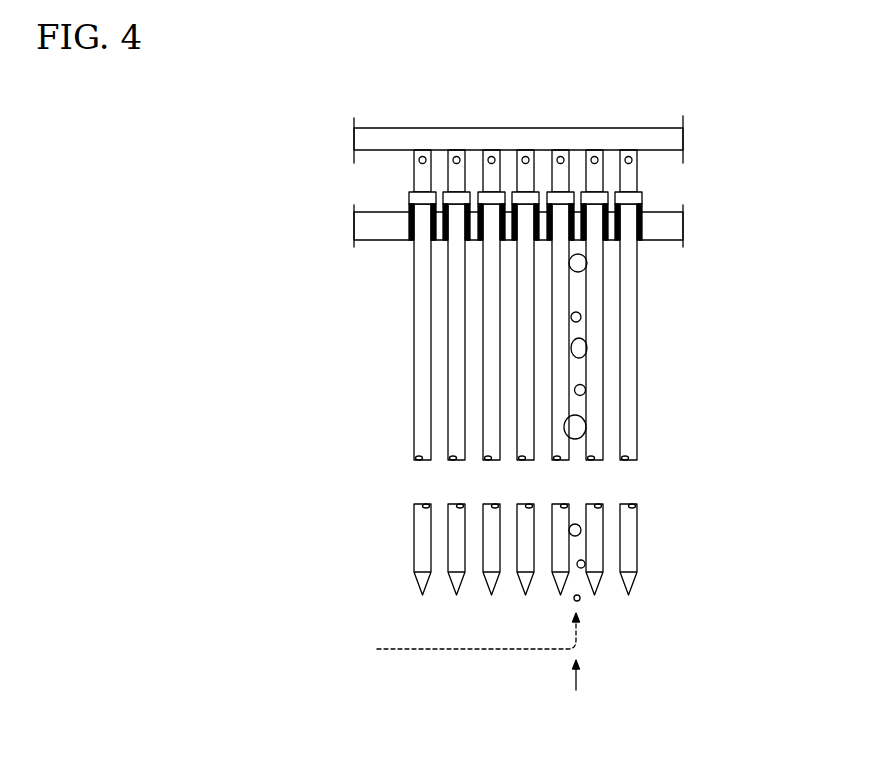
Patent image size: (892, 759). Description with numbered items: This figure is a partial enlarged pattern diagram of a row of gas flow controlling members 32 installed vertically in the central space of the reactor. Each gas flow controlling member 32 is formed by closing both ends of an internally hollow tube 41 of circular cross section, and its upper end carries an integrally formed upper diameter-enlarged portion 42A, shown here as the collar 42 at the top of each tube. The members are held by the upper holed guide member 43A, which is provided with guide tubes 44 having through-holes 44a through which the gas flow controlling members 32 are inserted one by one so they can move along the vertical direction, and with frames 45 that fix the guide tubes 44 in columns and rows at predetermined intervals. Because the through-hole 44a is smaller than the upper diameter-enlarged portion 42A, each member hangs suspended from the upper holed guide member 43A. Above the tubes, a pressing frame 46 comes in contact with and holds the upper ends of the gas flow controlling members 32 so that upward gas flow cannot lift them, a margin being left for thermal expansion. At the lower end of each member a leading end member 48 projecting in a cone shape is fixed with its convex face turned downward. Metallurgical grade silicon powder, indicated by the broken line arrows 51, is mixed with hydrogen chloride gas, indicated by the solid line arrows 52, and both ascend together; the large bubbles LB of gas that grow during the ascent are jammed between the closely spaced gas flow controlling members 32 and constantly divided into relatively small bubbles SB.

The gas flow controlling member 32 is at (607, 338).
The internally hollow tube 41 is at (555, 332).
The terminal tab 42 is at (522, 196).
The upper diameter-enlarged portion 42A is at (410, 195).
The upper holed guide member 43A is at (685, 247).
The guide tube 44 is at (434, 242).
The through-hole 44a is at (573, 232).
The frame 45 is at (487, 220).
The pressing frame 46 is at (598, 137).
The leading end member 48 is at (423, 582).
The broken line arrow 51 is at (576, 632).
The solid line arrow 52 is at (576, 690).
The small bubble SB is at (587, 372).
The large bubble LB is at (578, 440).